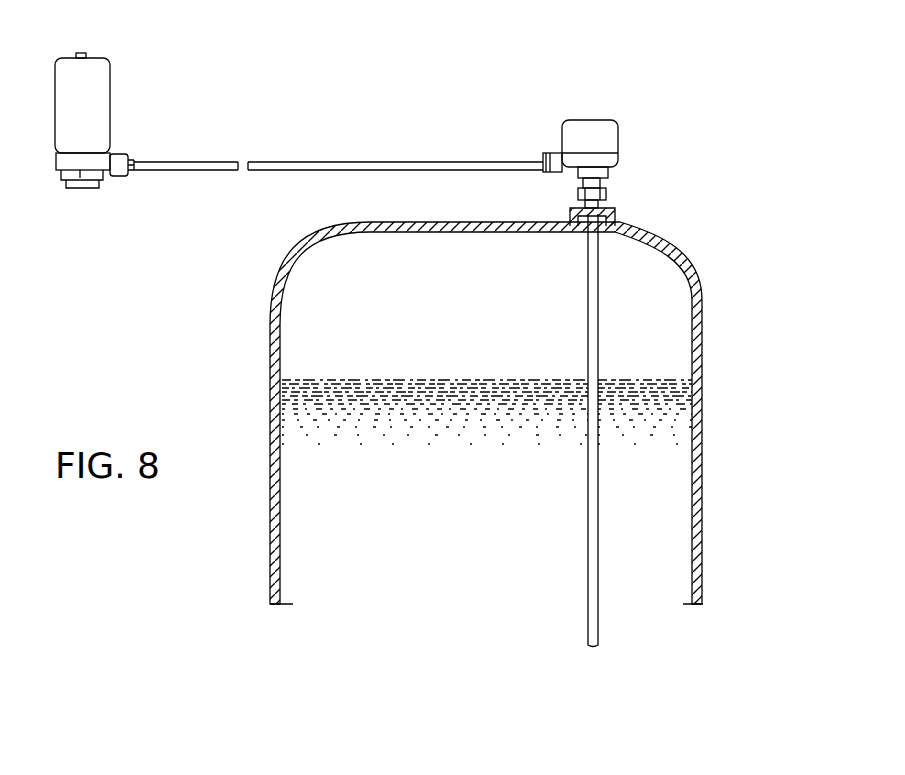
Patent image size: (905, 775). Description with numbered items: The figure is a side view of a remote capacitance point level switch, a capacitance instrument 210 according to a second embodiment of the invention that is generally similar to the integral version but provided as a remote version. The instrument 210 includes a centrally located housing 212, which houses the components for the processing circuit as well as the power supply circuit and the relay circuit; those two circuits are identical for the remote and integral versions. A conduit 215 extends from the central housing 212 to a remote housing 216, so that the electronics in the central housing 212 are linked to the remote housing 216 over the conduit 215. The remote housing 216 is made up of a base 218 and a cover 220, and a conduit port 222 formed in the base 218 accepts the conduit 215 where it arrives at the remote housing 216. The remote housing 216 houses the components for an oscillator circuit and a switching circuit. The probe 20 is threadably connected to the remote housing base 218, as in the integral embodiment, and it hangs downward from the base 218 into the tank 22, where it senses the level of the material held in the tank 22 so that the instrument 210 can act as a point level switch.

The housing 212 is at (118, 94).
The conduit 215 is at (385, 162).
The cover 220 is at (618, 130).
The capacitance instrument 210 is at (664, 139).
The remote housing 216 is at (634, 169).
The conduit port 222 is at (547, 173).
The base 218 is at (580, 180).
The probe 20 is at (588, 310).
The tank 22 is at (683, 268).